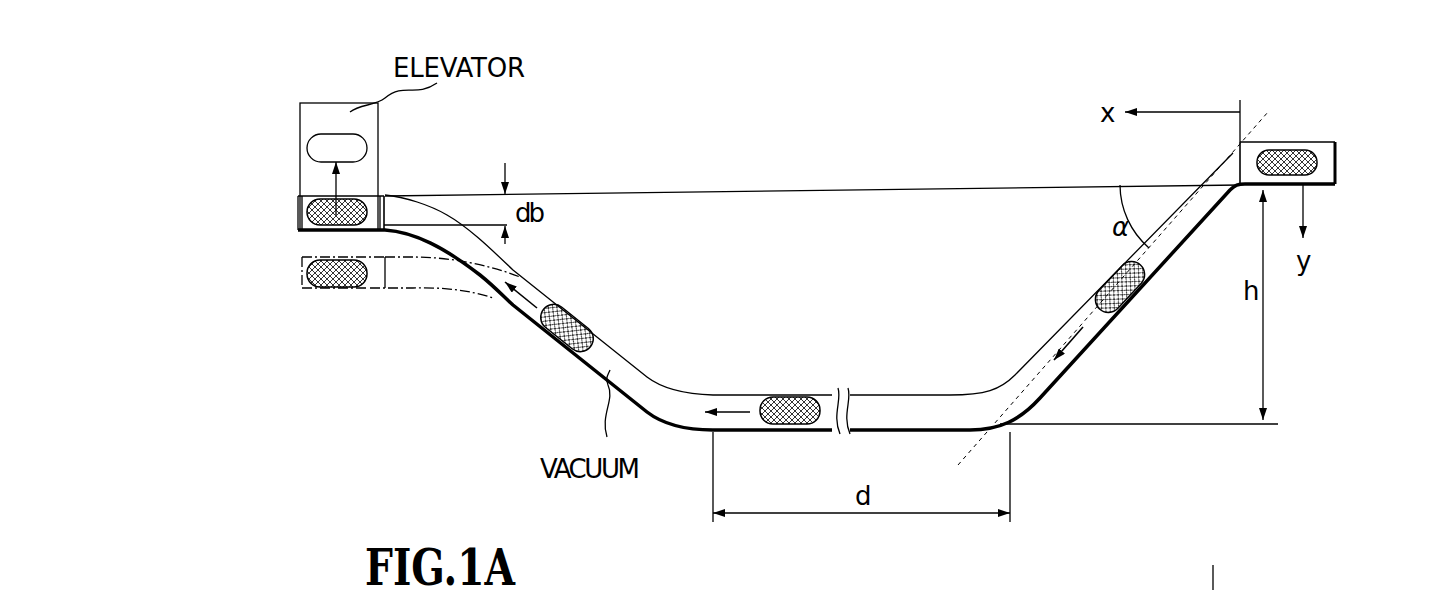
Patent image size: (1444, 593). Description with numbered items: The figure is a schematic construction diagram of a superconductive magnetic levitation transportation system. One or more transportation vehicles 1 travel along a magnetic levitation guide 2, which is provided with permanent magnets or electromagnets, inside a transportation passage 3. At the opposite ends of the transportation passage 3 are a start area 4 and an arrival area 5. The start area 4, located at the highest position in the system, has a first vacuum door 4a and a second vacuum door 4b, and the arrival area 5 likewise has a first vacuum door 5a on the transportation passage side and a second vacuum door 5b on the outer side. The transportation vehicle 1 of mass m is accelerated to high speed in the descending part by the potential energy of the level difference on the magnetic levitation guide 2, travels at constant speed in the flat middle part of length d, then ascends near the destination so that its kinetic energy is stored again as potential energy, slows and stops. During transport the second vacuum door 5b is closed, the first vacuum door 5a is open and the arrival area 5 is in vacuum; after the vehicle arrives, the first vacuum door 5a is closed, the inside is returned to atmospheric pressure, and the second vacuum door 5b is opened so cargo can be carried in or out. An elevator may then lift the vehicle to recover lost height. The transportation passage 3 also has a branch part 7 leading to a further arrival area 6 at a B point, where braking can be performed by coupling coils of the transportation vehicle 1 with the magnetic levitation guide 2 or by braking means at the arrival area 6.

The transportation vehicle 1 is at (785, 397).
The magnetic levitation guide 2 is at (870, 393).
The transportation passage 3 is at (1057, 330).
The start area 4 is at (1275, 142).
The first vacuum door 4a is at (1240, 150).
The second vacuum door 4b is at (1337, 165).
The arrival area 5 is at (379, 157).
The first vacuum door 5a is at (385, 205).
The second vacuum door 5b is at (298, 213).
The arrival area 6 is at (350, 295).
The branch part 7 is at (497, 302).